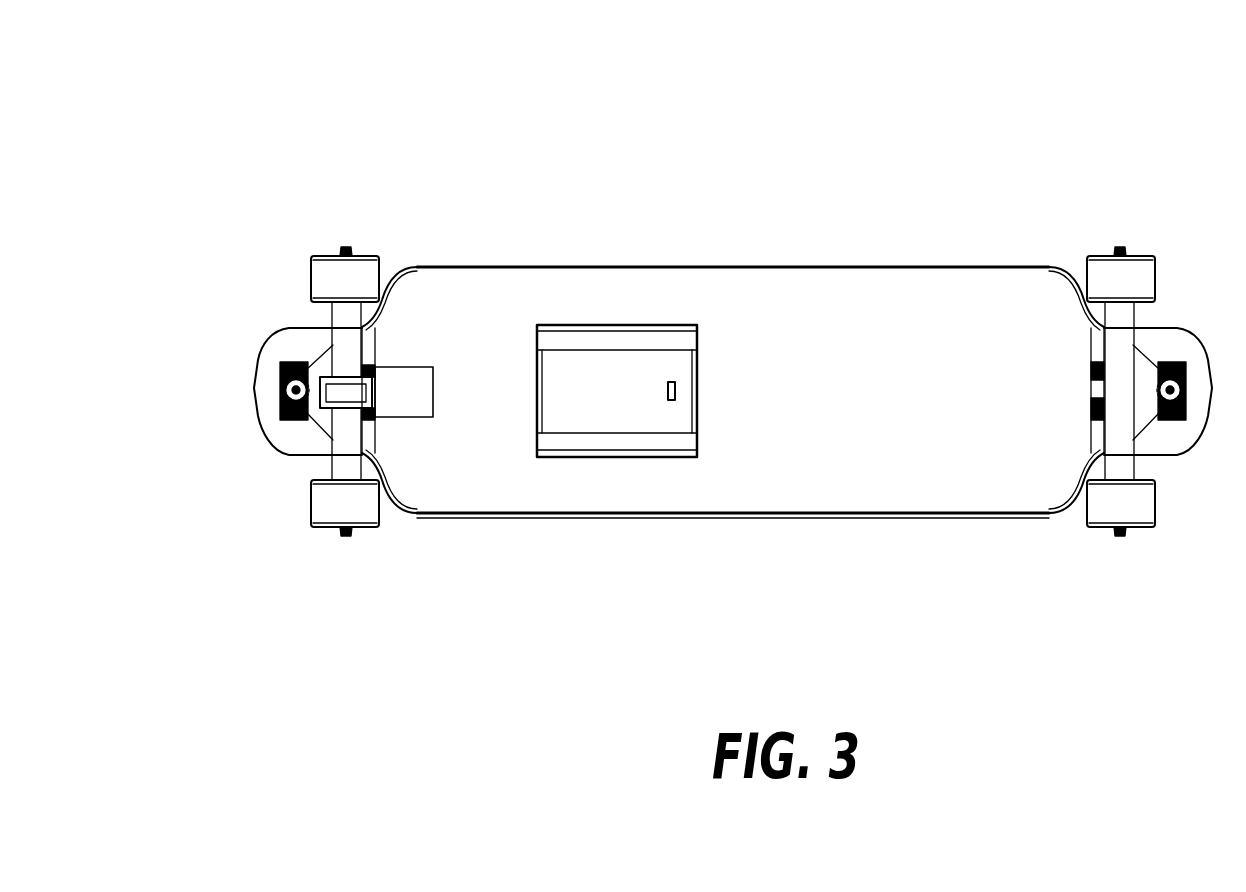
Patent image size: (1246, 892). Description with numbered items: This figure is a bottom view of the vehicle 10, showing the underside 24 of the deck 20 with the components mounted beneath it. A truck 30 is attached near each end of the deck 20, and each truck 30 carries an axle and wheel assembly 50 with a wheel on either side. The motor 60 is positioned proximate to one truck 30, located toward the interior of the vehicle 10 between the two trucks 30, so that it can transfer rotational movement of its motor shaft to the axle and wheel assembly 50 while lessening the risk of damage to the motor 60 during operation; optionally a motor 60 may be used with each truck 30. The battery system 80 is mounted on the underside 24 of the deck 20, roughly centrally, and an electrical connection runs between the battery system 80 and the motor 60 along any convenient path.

The vehicle 10 is at (955, 193).
The deck 20 is at (733, 265).
The underside 24 is at (902, 472).
The truck 30 is at (318, 420).
The axle and wheel assembly 50 is at (333, 500).
The motor 60 is at (408, 392).
The battery system 80 is at (612, 410).